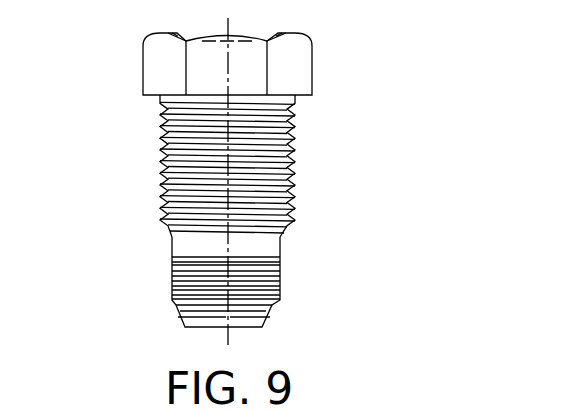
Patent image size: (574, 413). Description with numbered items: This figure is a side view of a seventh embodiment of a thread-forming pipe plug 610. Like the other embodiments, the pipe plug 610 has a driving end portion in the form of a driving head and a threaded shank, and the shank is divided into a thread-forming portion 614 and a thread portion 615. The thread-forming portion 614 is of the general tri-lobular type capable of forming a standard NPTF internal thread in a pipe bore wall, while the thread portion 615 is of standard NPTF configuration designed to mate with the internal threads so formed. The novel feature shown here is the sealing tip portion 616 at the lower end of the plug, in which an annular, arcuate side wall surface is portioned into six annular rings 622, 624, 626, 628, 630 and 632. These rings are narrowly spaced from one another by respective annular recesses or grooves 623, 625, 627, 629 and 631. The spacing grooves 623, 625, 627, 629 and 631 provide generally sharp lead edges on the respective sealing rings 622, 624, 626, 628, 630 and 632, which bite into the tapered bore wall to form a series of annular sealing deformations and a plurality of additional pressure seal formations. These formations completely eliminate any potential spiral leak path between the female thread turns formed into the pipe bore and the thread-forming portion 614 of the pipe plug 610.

The pipe plug 610 is at (135, 118).
The thread-forming portion 614 is at (157, 158).
The thread portion 615 is at (303, 127).
The sealing tip portion 616 is at (130, 236).
The annular ring 622 is at (280, 252).
The annular groove 623 is at (168, 270).
The annular ring 624 is at (283, 268).
The annular groove 625 is at (168, 281).
The annular ring 626 is at (283, 280).
The annular groove 627 is at (168, 291).
The annular ring 628 is at (283, 291).
The annular groove 629 is at (170, 302).
The annular ring 630 is at (280, 303).
The annular groove 631 is at (175, 318).
The annular ring 632 is at (273, 318).